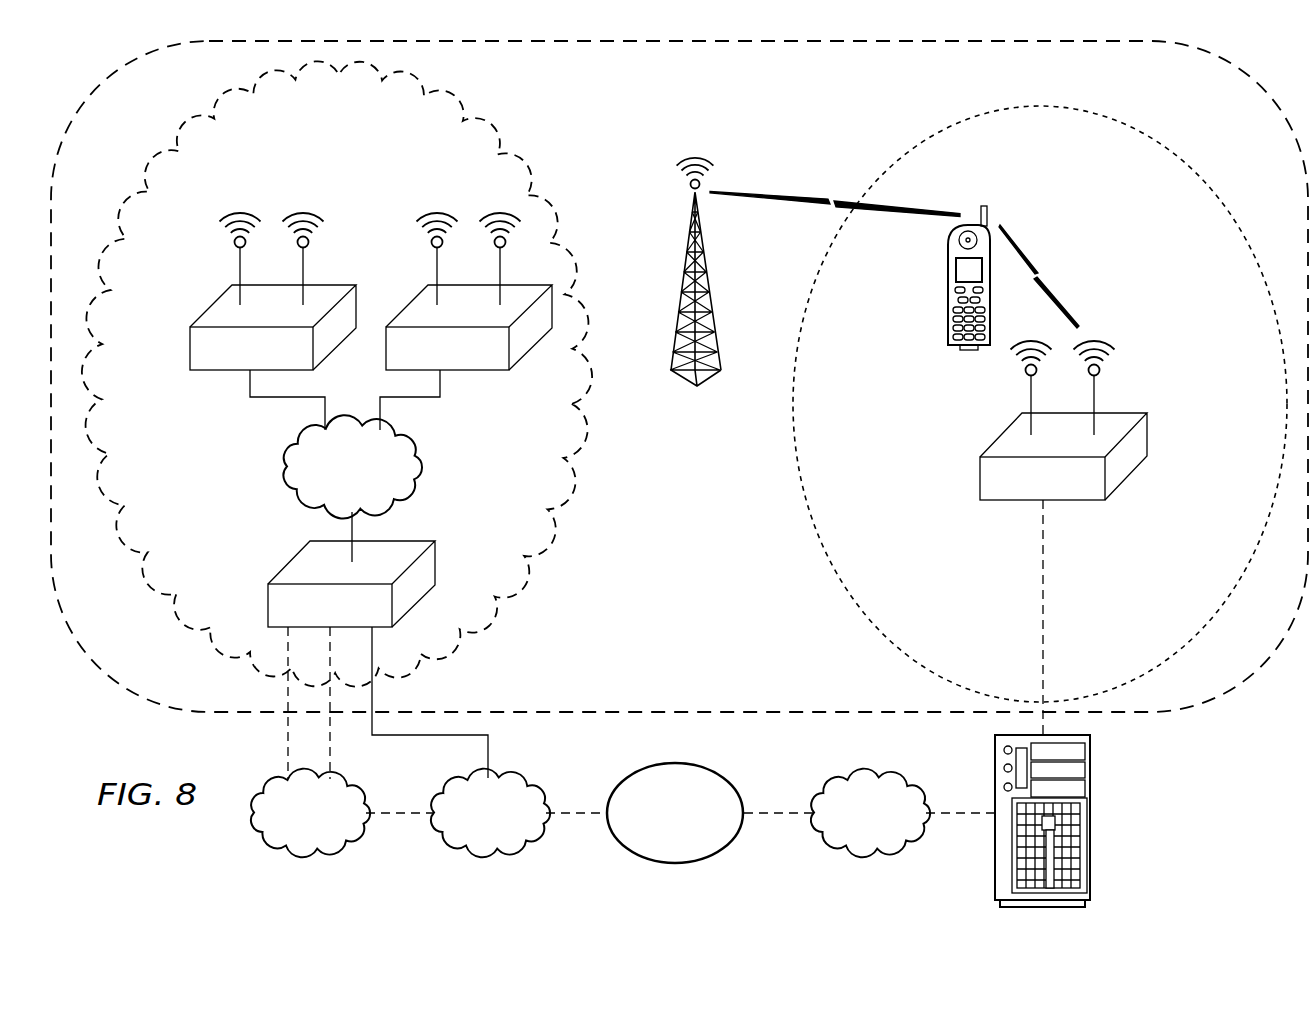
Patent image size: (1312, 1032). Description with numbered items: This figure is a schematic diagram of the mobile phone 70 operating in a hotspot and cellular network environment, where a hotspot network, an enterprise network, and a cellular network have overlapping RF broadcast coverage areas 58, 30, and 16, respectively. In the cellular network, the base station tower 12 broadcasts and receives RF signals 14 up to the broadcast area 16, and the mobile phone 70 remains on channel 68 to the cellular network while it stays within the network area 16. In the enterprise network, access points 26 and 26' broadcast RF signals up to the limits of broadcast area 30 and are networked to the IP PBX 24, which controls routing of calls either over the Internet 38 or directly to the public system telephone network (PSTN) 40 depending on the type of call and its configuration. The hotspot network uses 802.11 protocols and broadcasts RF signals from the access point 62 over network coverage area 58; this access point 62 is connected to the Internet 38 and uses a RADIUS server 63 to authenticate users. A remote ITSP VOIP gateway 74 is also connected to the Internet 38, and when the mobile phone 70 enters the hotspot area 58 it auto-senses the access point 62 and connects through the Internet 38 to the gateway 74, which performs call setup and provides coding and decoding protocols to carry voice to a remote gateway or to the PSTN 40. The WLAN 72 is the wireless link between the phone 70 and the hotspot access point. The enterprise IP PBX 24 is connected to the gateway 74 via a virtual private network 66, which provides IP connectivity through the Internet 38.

The base station tower 12 is at (705, 292).
The RF signals 14 is at (688, 160).
The broadcast area 16 is at (1128, 712).
The IP PBX 24 is at (268, 606).
The access point 26 is at (466, 321).
The access point 26' is at (273, 321).
The broadcast area 30 is at (200, 117).
The Internet 38 is at (306, 850).
The public system telephone network (PSTN) 40 is at (414, 492).
The hotspot network coverage area 58 is at (1166, 151).
The access point 62 is at (980, 478).
The RADIUS server 63 is at (1090, 840).
The virtual private network (VPN) 66 is at (288, 730).
The channel 68 is at (800, 198).
The mobile phone 70 is at (948, 294).
The WLAN 72 is at (1020, 254).
The ITSP VOIP gateway 74 is at (675, 863).